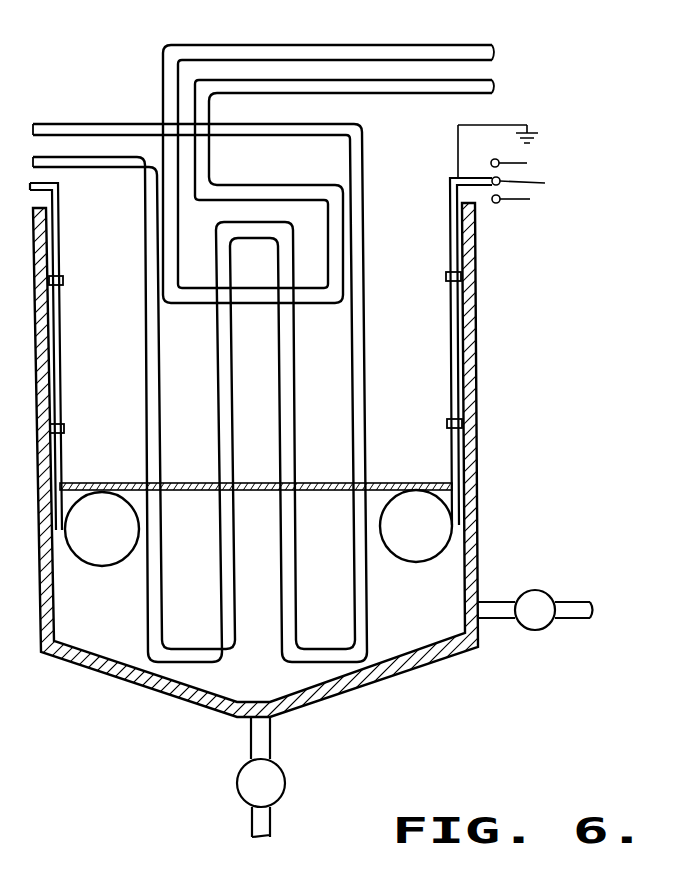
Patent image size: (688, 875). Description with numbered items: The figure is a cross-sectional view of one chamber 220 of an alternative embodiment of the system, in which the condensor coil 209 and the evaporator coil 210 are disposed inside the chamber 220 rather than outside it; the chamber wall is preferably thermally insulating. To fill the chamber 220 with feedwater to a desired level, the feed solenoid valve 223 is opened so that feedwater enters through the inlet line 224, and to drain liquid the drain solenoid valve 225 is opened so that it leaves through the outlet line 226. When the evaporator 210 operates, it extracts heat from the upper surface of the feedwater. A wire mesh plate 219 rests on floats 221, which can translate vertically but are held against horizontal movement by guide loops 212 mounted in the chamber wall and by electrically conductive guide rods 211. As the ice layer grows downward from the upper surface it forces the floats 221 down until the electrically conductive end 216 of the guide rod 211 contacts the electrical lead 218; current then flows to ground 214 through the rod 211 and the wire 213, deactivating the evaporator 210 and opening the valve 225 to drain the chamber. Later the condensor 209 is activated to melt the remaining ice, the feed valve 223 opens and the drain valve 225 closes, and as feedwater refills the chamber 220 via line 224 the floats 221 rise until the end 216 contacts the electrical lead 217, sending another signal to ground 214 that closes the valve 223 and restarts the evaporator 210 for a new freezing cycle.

The condensor coil 209 is at (100, 124).
The evaporator coil 210 is at (423, 45).
The guide rod 211 is at (63, 455).
The guide loop 212 is at (65, 278).
The wire 213 is at (458, 125).
The ground 214 is at (532, 128).
The electrically conductive end 216 is at (545, 183).
The electrical lead 217 is at (500, 159).
The electrical lead 218 is at (500, 203).
The wire mesh plate 219 is at (330, 483).
The chamber 220 is at (482, 357).
The float 221 is at (105, 566).
The solenoid valve 223 is at (538, 590).
The inlet line 224 is at (505, 620).
The solenoid valve 225 is at (286, 783).
The outlet line 226 is at (272, 740).